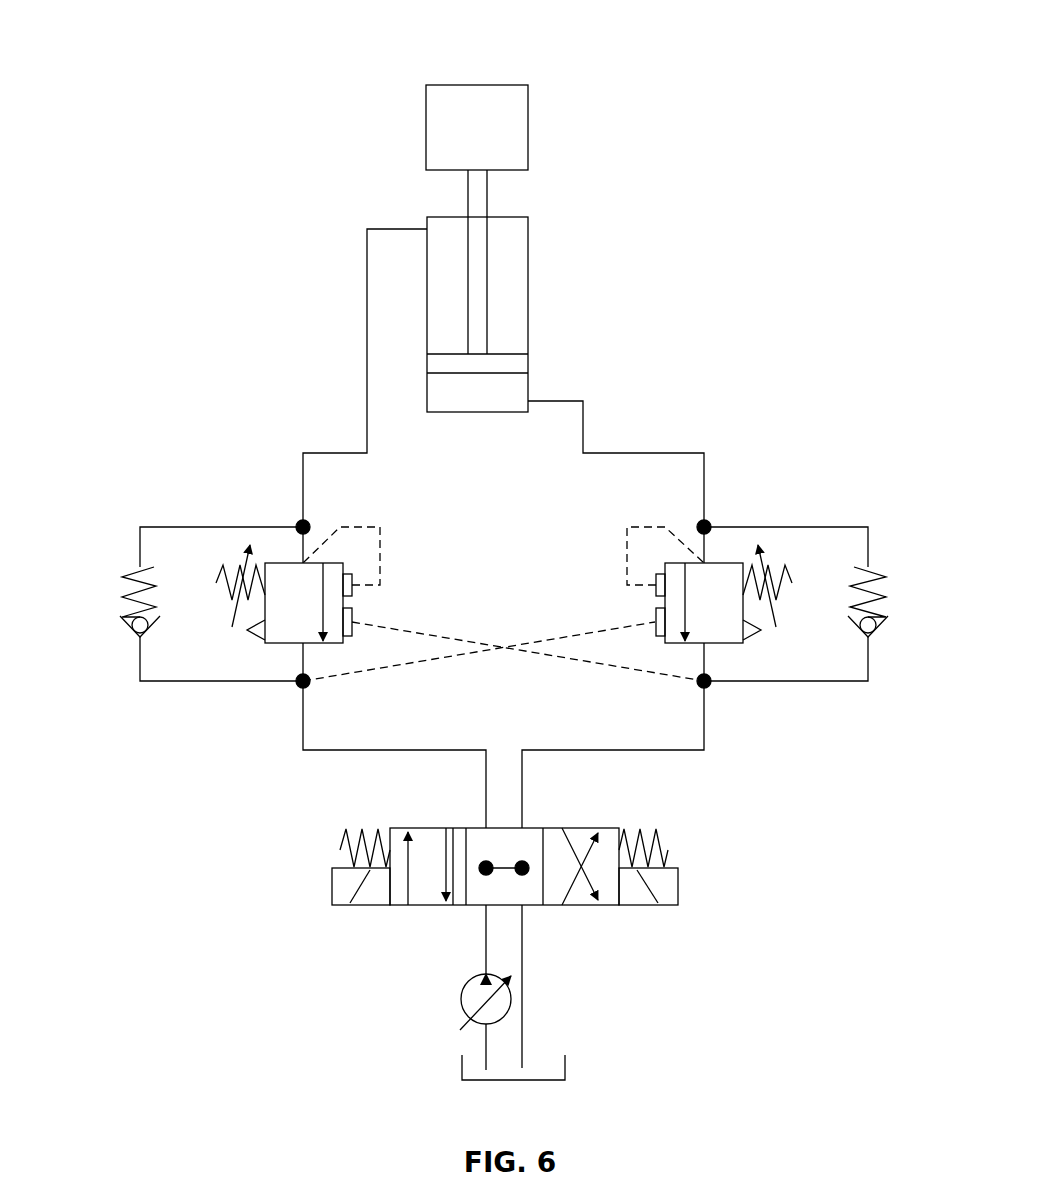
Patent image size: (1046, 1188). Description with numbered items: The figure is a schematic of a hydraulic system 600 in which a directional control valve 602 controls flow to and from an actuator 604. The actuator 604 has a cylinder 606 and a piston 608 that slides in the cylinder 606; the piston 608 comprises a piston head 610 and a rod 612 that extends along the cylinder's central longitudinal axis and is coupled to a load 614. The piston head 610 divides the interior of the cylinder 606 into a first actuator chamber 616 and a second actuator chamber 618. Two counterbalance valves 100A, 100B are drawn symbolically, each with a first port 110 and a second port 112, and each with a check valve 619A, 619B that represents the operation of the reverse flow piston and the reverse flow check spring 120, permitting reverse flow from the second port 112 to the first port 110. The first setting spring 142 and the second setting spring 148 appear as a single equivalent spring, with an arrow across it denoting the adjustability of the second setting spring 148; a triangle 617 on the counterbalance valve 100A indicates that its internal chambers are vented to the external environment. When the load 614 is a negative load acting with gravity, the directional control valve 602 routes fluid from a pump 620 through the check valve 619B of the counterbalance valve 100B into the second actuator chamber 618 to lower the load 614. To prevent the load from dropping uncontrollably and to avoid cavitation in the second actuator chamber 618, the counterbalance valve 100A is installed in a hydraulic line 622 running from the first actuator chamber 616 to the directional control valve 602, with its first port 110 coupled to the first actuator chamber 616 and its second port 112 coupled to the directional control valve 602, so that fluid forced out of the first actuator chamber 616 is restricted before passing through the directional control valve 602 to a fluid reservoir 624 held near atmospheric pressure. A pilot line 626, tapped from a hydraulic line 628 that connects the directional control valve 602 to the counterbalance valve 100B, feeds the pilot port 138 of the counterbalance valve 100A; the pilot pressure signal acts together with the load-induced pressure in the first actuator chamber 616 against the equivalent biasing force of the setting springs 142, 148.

The hydraulic system 600 is at (272, 70).
The load 614 is at (476, 82).
The actuator 604 is at (440, 213).
The rod 612 is at (487, 185).
The piston 608 is at (454, 350).
The cylinder 606 is at (427, 307).
The piston head 610 is at (442, 360).
The second actuator chamber 618 is at (512, 272).
The first actuator chamber 616 is at (507, 383).
The hydraulic line 622 is at (583, 428).
The hydraulic line 628 is at (303, 722).
The counterbalance valve 100B is at (220, 502).
The counterbalance valve 100A is at (800, 498).
The check valve 619B is at (110, 620).
The check valve 619A is at (905, 568).
The reverse flow check spring 120 is at (877, 572).
The first port 110 is at (712, 520).
The second port 112 is at (715, 692).
The pilot port 138 is at (648, 612).
The pilot line 626 is at (575, 632).
The triangle 617 is at (747, 635).
The first setting spring 142 is at (821, 662).
The second setting spring 148 is at (787, 593).
The directional control valve 602 is at (323, 843).
The pump 620 is at (462, 999).
The fluid reservoir 624 is at (567, 1067).